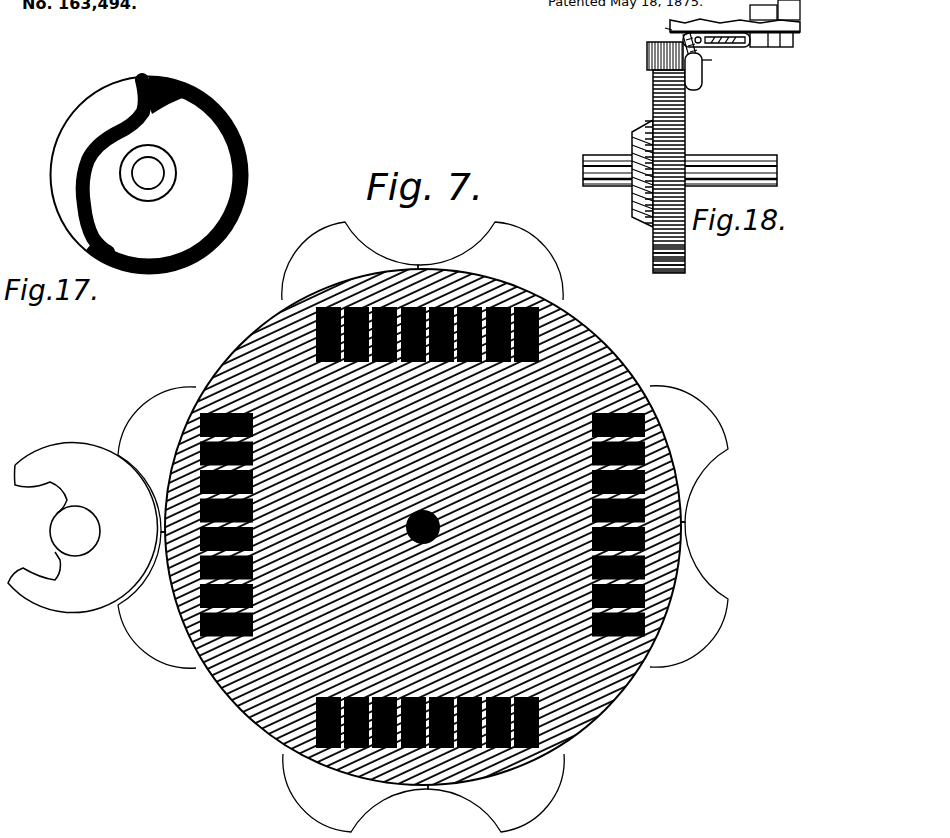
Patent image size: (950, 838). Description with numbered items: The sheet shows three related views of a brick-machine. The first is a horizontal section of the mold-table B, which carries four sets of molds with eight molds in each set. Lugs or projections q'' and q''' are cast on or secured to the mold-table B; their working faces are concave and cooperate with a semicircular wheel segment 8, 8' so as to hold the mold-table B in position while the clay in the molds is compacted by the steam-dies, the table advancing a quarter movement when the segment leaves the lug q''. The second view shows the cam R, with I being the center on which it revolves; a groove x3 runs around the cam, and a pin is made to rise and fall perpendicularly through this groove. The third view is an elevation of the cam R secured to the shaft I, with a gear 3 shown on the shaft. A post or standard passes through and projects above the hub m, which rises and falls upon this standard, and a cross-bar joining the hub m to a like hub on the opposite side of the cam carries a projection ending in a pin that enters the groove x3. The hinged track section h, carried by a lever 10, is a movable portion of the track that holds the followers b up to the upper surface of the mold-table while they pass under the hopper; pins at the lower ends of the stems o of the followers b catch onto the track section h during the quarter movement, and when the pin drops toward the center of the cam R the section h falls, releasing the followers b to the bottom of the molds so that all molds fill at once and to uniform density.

In FIG. 7, the mold-table B is at (423, 527).
In FIG. 18, the mold-table B is at (735, 16).
In FIG. 7, the lug or projection q'' is at (423, 527).
In FIG. 7, the lug or projection q''' is at (423, 527).
In FIG. 7, the C-shaped cam piece 8 is at (82, 528).
In FIG. 7, the cam piece hole 8' is at (75, 547).
In FIG. 17, the cam R is at (149, 175).
In FIG. 18, the cam R is at (653, 171).
In FIG. 17, the shaft I is at (148, 173).
In FIG. 18, the shaft I is at (675, 170).
In FIG. 17, the groove x3 is at (141, 169).
In FIG. 18, the bevel gear 3 is at (633, 173).
In FIG. 18, the hub m is at (665, 56).
In FIG. 18, the movable track section h is at (711, 59).
In FIG. 18, the follower b is at (663, 26).
In FIG. 18, the lever 10 is at (716, 40).
In FIG. 18, the stem o is at (771, 39).